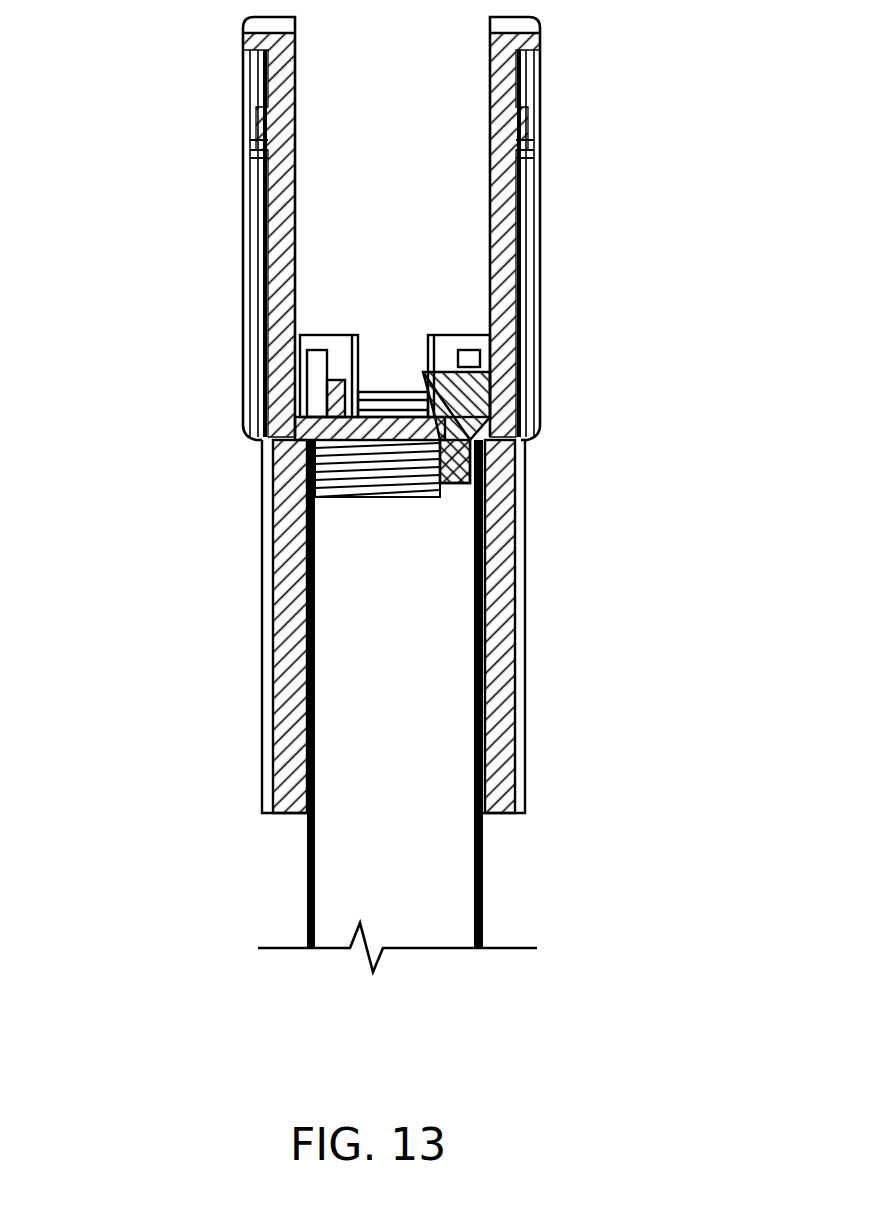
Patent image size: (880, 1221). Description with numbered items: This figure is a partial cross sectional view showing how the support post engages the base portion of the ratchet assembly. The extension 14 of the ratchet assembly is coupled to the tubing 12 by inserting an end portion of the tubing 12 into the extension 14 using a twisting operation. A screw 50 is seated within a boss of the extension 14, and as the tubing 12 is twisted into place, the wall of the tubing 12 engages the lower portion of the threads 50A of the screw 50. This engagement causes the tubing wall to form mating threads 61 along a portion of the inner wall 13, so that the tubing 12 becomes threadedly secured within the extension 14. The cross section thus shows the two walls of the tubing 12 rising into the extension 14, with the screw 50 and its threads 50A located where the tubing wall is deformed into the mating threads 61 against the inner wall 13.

The tubing 12 is at (487, 900).
The inner wall 13 is at (472, 888).
The extension 14 is at (525, 623).
The screw 50 is at (472, 378).
The threads 50A is at (433, 480).
The mating threads 61 is at (303, 523).